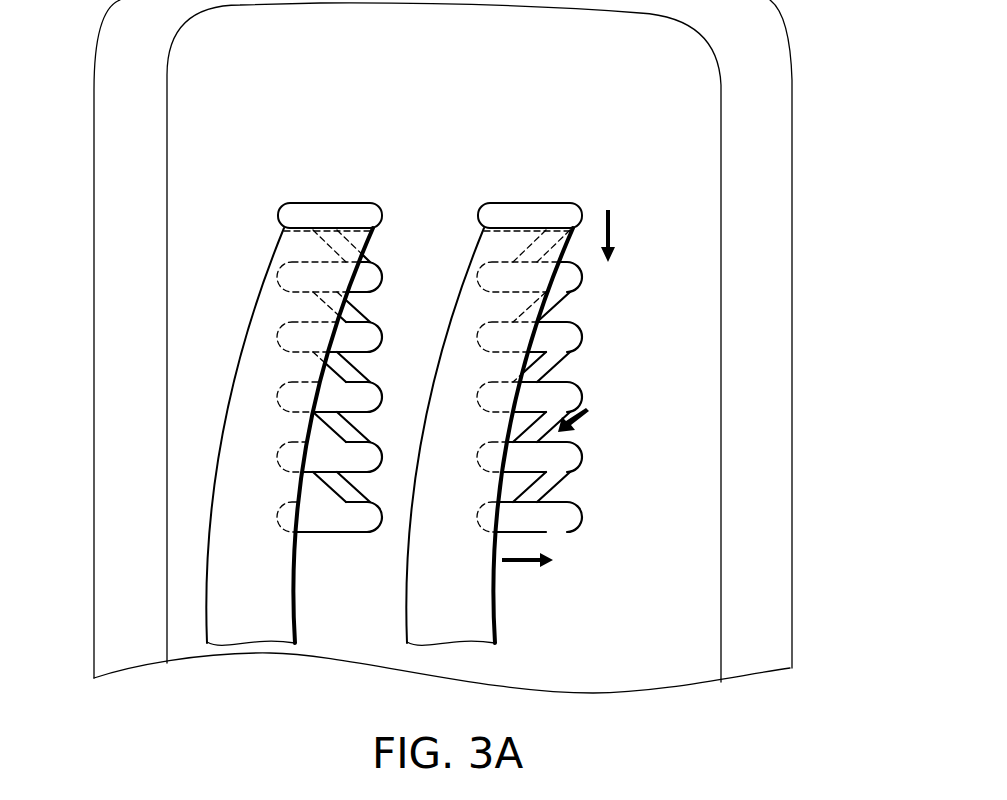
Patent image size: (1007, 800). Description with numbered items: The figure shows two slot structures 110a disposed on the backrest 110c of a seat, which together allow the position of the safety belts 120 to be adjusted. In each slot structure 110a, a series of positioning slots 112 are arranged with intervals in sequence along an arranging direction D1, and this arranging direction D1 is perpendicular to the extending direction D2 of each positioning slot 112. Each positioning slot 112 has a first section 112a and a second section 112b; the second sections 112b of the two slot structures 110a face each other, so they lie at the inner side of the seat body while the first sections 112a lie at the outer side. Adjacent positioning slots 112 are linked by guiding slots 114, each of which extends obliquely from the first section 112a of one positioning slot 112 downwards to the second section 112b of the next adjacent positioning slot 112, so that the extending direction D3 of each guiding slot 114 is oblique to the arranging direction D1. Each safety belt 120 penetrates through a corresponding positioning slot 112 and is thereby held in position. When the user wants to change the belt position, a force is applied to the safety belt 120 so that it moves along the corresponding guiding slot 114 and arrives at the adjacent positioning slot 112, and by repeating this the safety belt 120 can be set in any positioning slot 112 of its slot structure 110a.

The slot structure 110a is at (385, 389).
The backrest 110c is at (776, 249).
The positioning slot 112 is at (319, 519).
The first section 112a is at (297, 179).
The second section 112b is at (345, 193).
The guiding slot 114 is at (336, 488).
The safety belt 120 is at (455, 353).
The arranging direction D1 is at (613, 229).
The extending direction of positioning slot D2 is at (523, 567).
The extending direction of guiding slot D3 is at (575, 430).